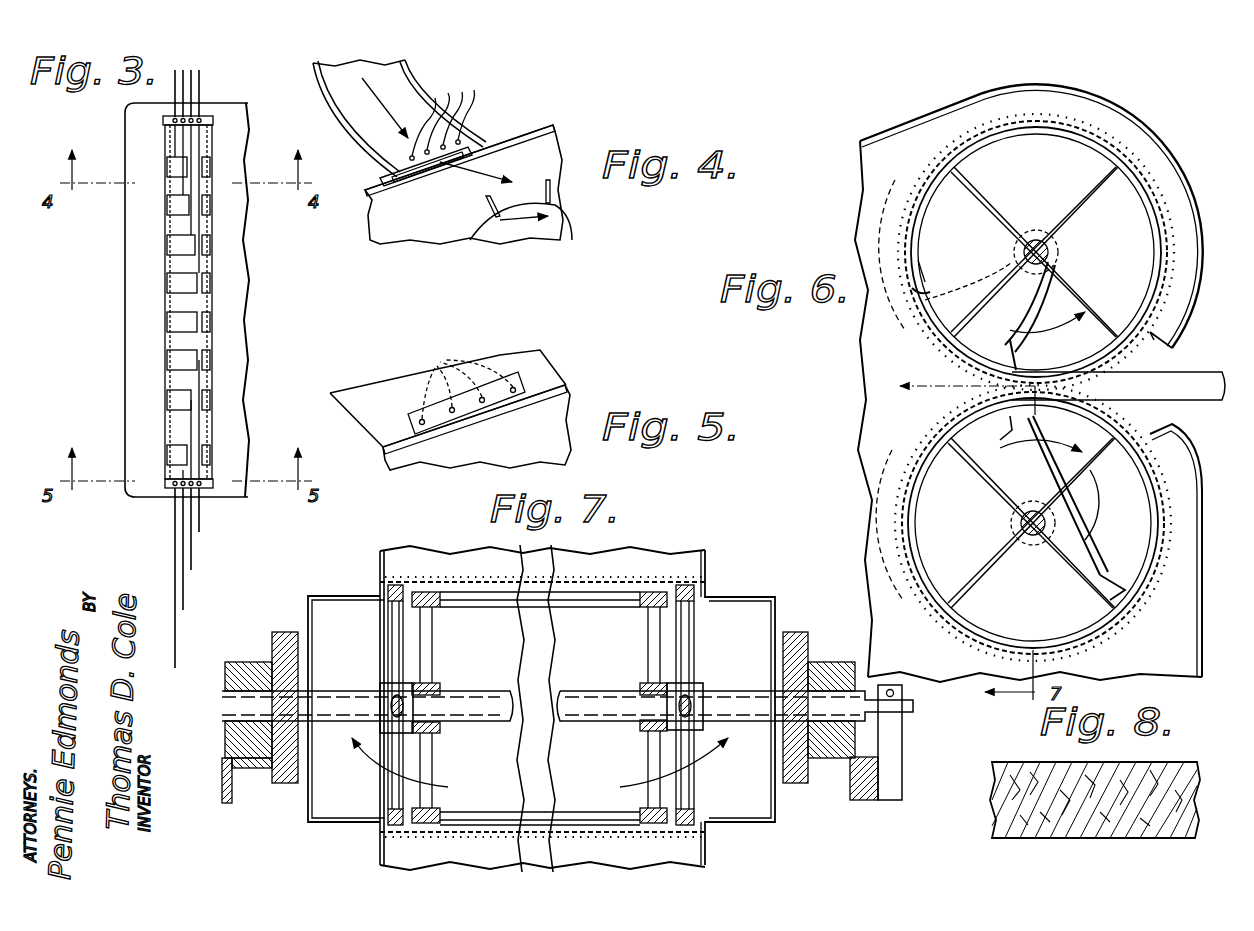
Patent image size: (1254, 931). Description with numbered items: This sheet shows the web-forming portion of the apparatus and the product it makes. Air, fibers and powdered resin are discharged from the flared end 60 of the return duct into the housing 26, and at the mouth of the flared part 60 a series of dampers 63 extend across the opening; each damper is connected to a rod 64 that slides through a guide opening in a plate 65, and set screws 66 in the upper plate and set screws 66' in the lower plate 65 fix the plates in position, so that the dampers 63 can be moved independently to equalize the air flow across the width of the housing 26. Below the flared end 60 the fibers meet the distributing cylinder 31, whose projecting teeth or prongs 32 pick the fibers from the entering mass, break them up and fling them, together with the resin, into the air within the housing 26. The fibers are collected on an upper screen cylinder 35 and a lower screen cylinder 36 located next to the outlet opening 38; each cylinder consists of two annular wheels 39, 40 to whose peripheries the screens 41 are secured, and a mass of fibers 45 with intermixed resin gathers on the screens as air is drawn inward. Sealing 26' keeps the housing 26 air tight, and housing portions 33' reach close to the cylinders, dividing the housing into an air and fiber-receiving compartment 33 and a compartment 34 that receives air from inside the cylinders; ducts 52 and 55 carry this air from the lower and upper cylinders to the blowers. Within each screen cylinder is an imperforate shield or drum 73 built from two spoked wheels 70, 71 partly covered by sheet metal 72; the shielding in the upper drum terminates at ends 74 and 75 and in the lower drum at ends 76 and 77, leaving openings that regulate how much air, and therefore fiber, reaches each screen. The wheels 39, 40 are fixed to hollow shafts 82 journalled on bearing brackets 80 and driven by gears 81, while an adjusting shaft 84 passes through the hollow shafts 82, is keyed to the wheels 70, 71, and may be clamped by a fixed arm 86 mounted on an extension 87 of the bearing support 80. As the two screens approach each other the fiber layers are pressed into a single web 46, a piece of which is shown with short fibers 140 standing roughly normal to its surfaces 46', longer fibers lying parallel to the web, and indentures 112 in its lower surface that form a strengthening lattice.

In FIG. 3, the housing 26 is at (209, 300).
In FIG. 4, the housing 26 is at (483, 169).
In FIG. 5, the housing 26 is at (498, 420).
In FIG. 6, the housing 26 is at (1044, 380).
In FIG. 7, the housing 26 is at (542, 694).
In FIG. 6, the sealing of the housing 26' is at (1183, 396).
In FIG. 4, the distributing cylinder 31 is at (572, 230).
In FIG. 4, the teeth or prongs 32 is at (552, 195).
In FIG. 7, the air and fiber-receiving compartment 33 is at (541, 688).
In FIG. 7, the housing portions 33' is at (541, 712).
In FIG. 7, the compartment 34 is at (336, 815).
In FIG. 6, the upper screen cylinder 35 is at (1108, 150).
In FIG. 6, the lower screen cylinder 36 is at (1045, 646).
In FIG. 6, the outlet opening 38 is at (1170, 360).
In FIG. 6, the annular support or wheel 39 is at (925, 310).
In FIG. 7, the annular support or wheel 39 is at (690, 600).
In FIG. 7, the annular support or wheel 40 is at (388, 613).
In FIG. 6, the screens 41 is at (960, 168).
In FIG. 7, the screens 41 is at (600, 575).
In FIG. 6, the mass of fibers 45 is at (905, 476).
In FIG. 6, the web 46 is at (1229, 419).
In FIG. 8, the web 46 is at (1115, 800).
In FIG. 8, the surface of the padding 46' is at (1063, 802).
In FIG. 6, the duct 52 is at (1118, 525).
In FIG. 6, the duct 55 is at (950, 250).
In FIG. 4, the flared end of the duct 60 is at (412, 73).
In FIG. 5, the flared end of the duct 60 is at (360, 385).
In FIG. 3, the dampers 63 is at (168, 166).
In FIG. 4, the dampers 63 is at (440, 170).
In FIG. 3, the rods 64 is at (205, 96).
In FIG. 4, the rods 64 is at (446, 121).
In FIG. 3, the plates 65 is at (213, 121).
In FIG. 5, the plates 65 is at (528, 380).
In FIG. 3, the set screws 66 is at (148, 118).
In FIG. 5, the set screws 66 is at (466, 390).
In FIG. 3, the bottom terminal plate 66' is at (165, 501).
In FIG. 7, the spoked wheel 70 is at (648, 630).
In FIG. 7, the spoked wheel 71 is at (443, 638).
In FIG. 7, the sheet metal 72 is at (640, 575).
In FIG. 7, the shield or drum 73 is at (570, 652).
In FIG. 6, the end of shielding material 74 is at (912, 270).
In FIG. 6, the end of shielding material 75 is at (1018, 345).
In FIG. 6, the end of shielding material 76 is at (1022, 418).
In FIG. 6, the end of shielding material 77 is at (1125, 582).
In FIG. 7, the bearing brackets 80 is at (225, 738).
In FIG. 7, the gears 81 is at (280, 784).
In FIG. 7, the hollow shafts 82 is at (362, 682).
In FIG. 6, the adjusting shaft 84 is at (1050, 243).
In FIG. 7, the adjusting shaft 84 is at (510, 690).
In FIG. 7, the fixed arm 86 is at (902, 740).
In FIG. 7, the extension of the bearing support 87 is at (222, 800).
In FIG. 8, the indentures 112 is at (1108, 838).
In FIG. 8, the short fibers 140 is at (1008, 762).